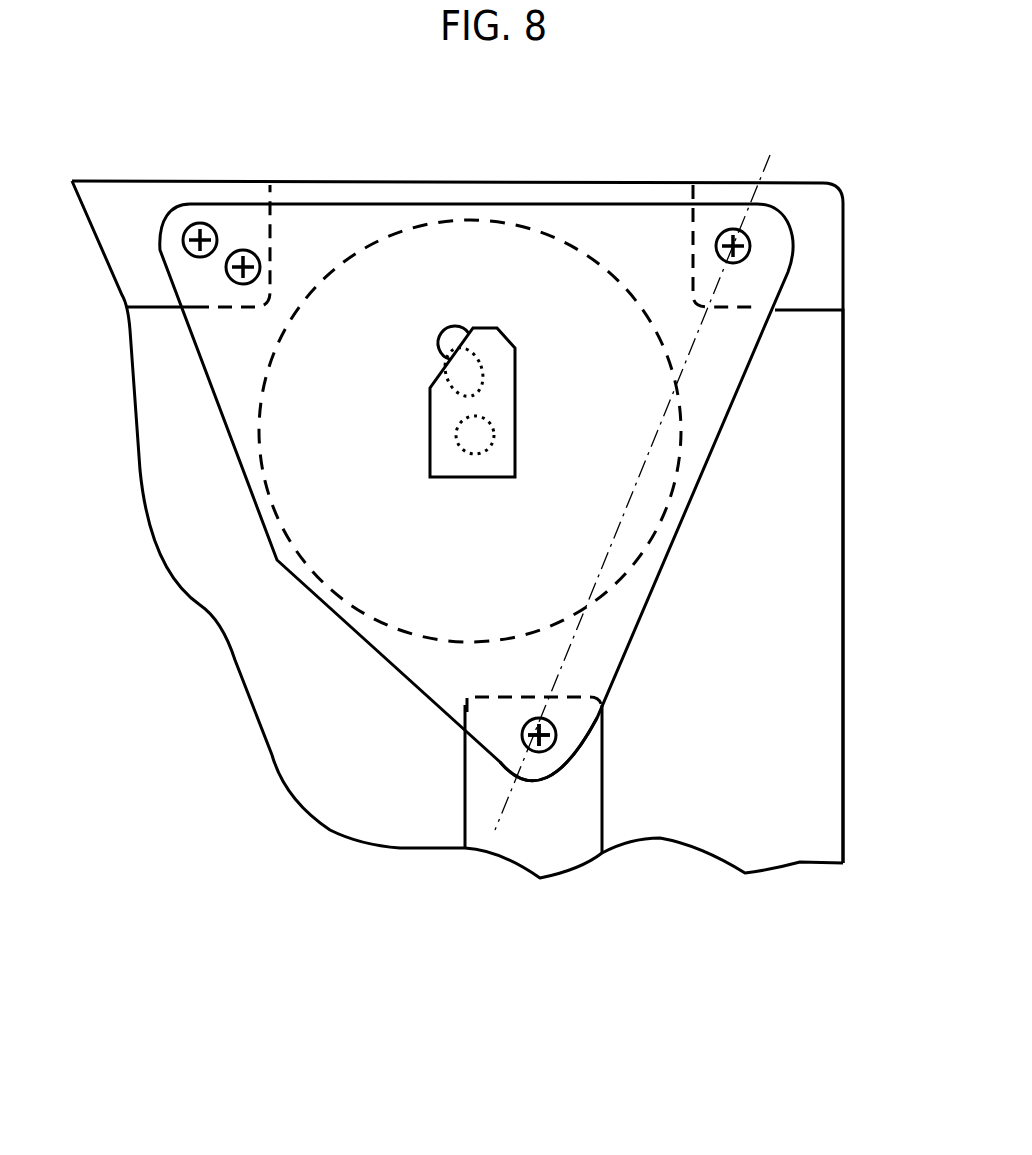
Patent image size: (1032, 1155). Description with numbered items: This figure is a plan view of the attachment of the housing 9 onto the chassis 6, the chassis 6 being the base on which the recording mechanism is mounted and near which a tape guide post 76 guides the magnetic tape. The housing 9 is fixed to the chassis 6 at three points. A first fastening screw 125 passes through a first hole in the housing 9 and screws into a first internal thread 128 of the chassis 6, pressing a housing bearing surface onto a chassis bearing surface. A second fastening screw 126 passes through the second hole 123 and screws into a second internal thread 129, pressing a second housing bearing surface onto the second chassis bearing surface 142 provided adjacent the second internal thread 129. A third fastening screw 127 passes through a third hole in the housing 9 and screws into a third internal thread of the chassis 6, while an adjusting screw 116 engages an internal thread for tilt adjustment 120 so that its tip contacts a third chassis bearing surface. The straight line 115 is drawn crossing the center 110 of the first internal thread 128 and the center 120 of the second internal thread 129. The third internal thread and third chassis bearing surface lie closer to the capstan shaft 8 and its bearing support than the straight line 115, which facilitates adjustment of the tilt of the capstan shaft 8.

The chassis 6 is at (515, 183).
The capstan shaft 8 is at (460, 443).
The housing 9 is at (236, 226).
The tape guide post 76 is at (455, 326).
The center of the first internal thread 110 is at (750, 253).
The straight line 115 is at (578, 638).
The adjusting screw 116 is at (200, 222).
The center of the second internal thread 120 is at (556, 752).
The second hole 123 is at (533, 752).
The first fastening screw 125 is at (724, 230).
The second fastening screw 126 is at (548, 752).
The third fastening screw 127 is at (248, 250).
The first internal thread 128 is at (737, 229).
The second internal thread 129 is at (527, 750).
The second chassis bearing surface 142 is at (540, 780).